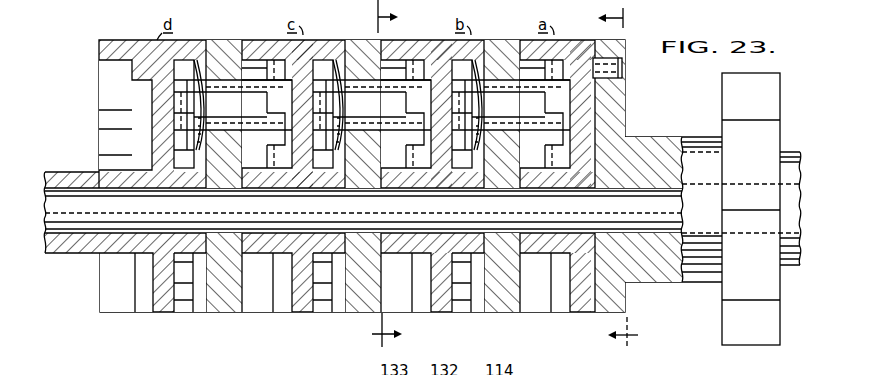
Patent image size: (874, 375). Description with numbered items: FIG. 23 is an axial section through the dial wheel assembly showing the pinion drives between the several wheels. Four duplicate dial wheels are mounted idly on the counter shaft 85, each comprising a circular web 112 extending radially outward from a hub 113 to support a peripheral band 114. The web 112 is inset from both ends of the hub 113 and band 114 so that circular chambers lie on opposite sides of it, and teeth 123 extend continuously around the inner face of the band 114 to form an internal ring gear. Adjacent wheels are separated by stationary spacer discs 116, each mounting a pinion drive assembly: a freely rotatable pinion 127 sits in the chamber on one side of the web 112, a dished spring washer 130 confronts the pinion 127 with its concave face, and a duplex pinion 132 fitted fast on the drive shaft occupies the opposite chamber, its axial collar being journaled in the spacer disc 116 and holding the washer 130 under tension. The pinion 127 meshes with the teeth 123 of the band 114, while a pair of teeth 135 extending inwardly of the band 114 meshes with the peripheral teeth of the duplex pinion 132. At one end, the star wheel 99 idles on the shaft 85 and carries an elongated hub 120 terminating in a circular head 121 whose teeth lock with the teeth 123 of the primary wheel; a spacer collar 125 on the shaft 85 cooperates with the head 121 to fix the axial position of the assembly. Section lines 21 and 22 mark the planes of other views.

The housing 114 is at (111, 40).
The sleeve 113 is at (100, 172).
The sleeve end 125 is at (43, 172).
The spacer block 116 is at (227, 300).
The bearing block 112 is at (295, 148).
The end wall 121 is at (622, 110).
The recess plug 135 is at (103, 117).
The bearing retainer 132 is at (250, 62).
The bearing 127 is at (187, 62).
The spring washer 130 is at (200, 72).
The bolt 123 is at (182, 298).
The shaft 85 is at (63, 228).
The splined shaft 120 is at (695, 142).
The collar 99 is at (722, 90).
The section line 22 is at (399, 173).
The section line 21 is at (606, 177).